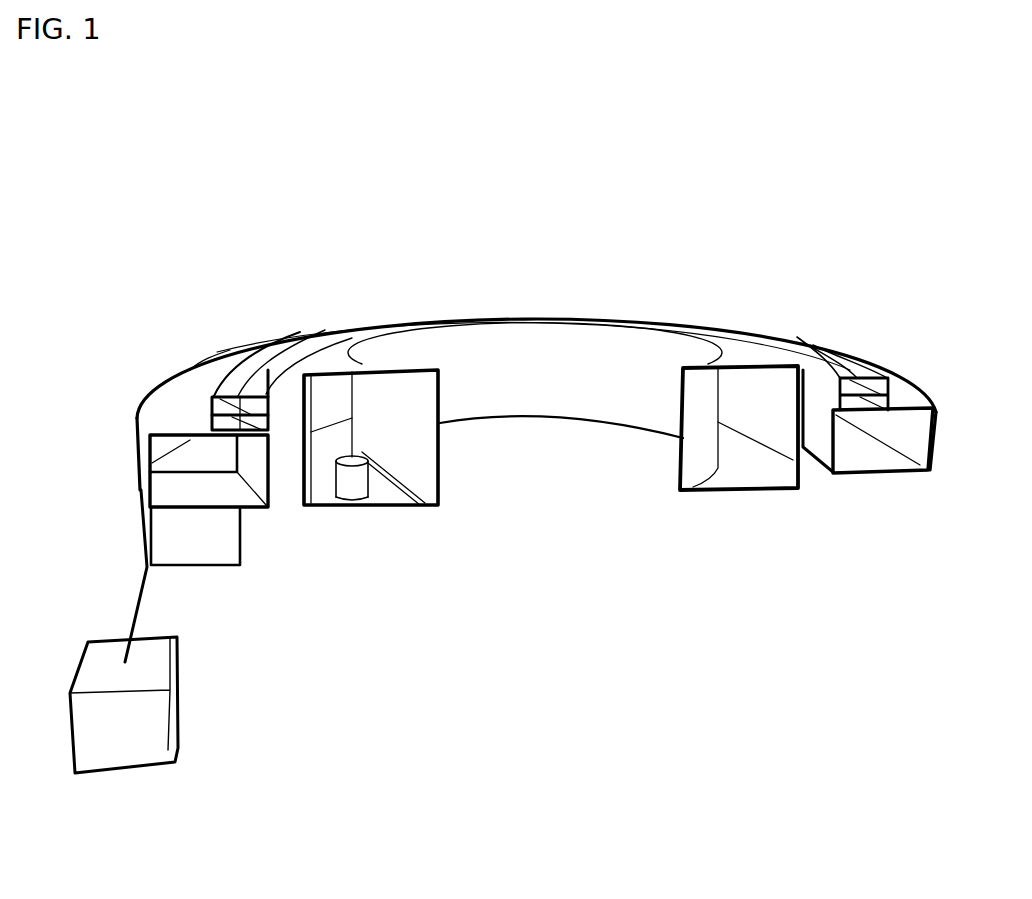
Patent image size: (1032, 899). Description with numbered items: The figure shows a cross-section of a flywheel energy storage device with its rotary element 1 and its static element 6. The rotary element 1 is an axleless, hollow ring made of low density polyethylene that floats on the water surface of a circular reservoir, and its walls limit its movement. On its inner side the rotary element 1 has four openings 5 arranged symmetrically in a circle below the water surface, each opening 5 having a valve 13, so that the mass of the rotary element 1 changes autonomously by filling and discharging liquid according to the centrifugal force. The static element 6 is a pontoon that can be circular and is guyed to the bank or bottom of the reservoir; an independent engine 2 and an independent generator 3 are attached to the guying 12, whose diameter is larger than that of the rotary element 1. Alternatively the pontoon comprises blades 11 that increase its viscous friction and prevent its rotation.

The rotary element 1 is at (463, 313).
The independent engine 2 is at (212, 392).
The independent generator 3 is at (207, 394).
The opening 5 is at (350, 486).
The static element 6 is at (165, 418).
The blades 11 is at (172, 523).
The guying 12 is at (135, 716).
The valve 13 is at (355, 448).